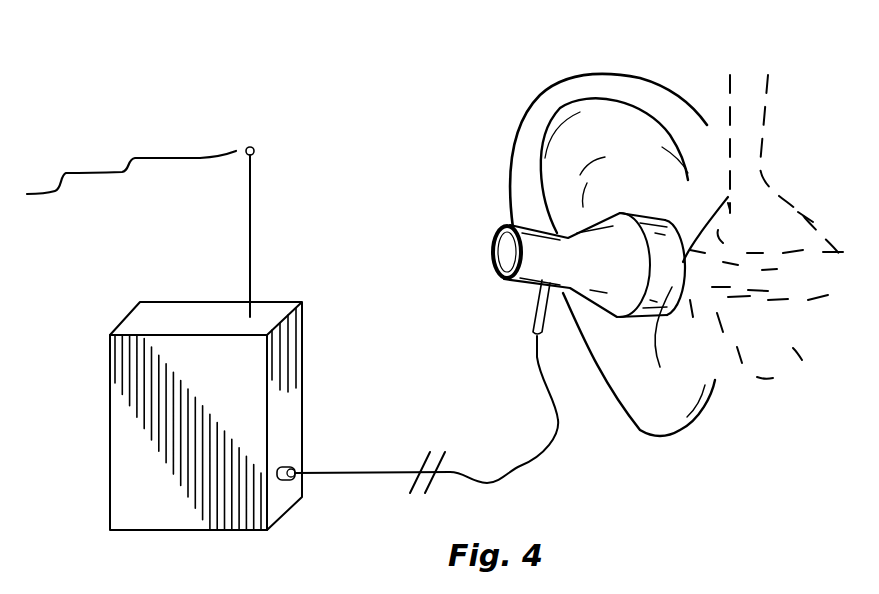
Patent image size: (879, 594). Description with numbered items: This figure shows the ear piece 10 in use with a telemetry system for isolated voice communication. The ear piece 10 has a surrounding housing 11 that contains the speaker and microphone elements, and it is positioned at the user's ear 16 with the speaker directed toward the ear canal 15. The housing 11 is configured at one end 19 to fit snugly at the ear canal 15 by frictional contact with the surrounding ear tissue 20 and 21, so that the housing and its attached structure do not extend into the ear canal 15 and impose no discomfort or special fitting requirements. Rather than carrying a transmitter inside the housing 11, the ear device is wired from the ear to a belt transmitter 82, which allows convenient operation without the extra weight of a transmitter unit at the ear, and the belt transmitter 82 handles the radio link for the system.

The ear piece 10 is at (481, 245).
The housing 11 is at (598, 322).
The ear canal 15 is at (722, 272).
The ear 16 is at (642, 95).
The end 19 is at (652, 297).
The ear tissue 20 is at (587, 323).
The ear tissue 21 is at (637, 213).
The belt transmitter 82 is at (133, 455).